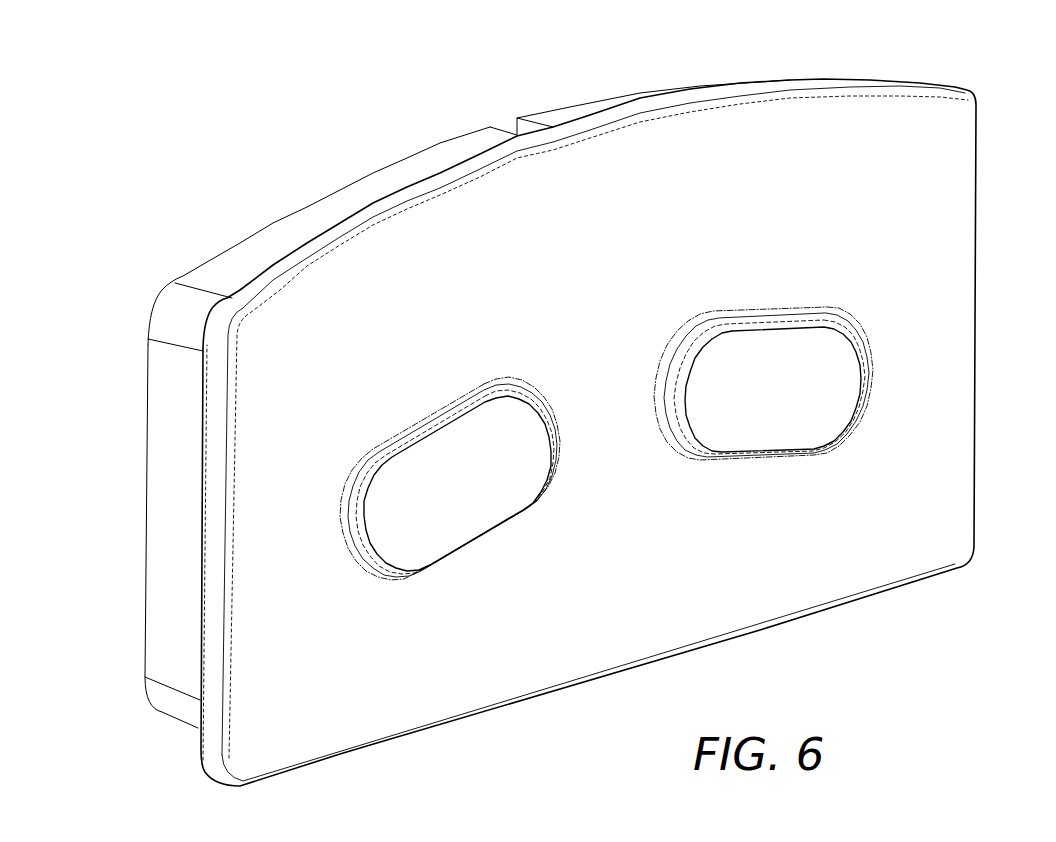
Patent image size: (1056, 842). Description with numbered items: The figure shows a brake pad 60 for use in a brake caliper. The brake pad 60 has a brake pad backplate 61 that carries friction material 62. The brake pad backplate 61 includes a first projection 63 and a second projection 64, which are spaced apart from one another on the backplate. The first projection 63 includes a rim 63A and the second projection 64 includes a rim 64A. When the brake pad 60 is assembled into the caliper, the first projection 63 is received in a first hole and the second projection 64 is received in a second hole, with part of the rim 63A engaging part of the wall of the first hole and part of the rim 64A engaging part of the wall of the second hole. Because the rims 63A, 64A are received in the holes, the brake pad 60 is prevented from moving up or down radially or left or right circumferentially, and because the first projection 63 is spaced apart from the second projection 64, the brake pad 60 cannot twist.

The brake pad 60 is at (589, 395).
The brake pad backplate 61 is at (968, 172).
The friction material 62 is at (550, 118).
The first projection 63 is at (858, 368).
The rim 63A is at (683, 462).
The second projection 64 is at (534, 470).
The rim 64A is at (372, 578).